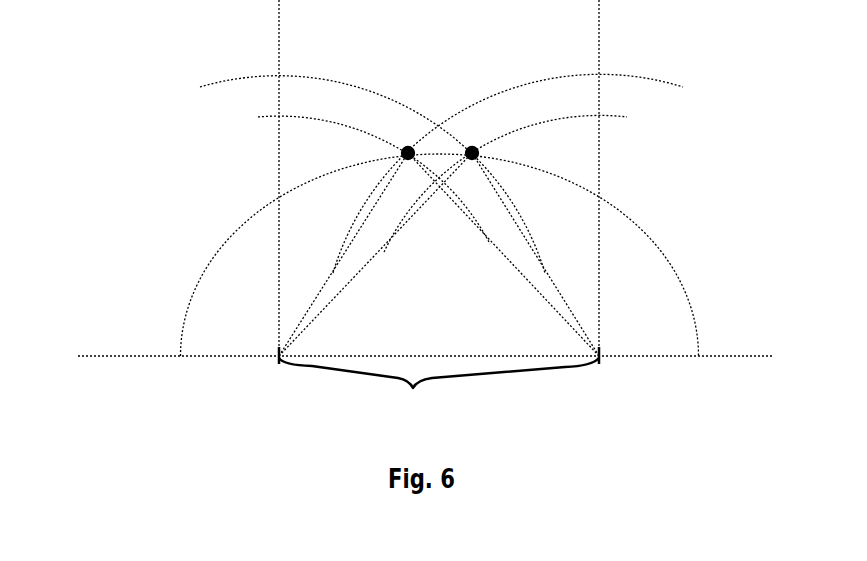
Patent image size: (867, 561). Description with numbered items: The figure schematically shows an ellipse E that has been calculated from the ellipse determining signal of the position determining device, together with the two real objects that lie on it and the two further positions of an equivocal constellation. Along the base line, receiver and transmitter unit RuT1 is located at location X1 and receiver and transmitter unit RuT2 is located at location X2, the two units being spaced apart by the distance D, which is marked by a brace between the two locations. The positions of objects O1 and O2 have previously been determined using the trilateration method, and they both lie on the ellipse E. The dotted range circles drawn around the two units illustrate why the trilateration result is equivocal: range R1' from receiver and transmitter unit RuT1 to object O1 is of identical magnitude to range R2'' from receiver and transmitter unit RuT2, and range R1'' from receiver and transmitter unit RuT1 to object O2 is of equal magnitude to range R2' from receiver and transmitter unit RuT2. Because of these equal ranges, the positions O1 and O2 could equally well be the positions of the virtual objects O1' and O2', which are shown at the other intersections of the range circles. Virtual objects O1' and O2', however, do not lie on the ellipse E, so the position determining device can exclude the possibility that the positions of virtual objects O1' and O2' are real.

The ellipse E is at (440, 255).
The range R1'' is at (372, 165).
The range R1' is at (374, 180).
The range R2'' is at (508, 165).
The range R2' is at (505, 183).
The object O1 is at (415, 206).
The object O2 is at (466, 206).
The virtual object O1' is at (450, 85).
The virtual object O2' is at (437, 233).
The receiver and transmitter unit RuT1 is at (281, 371).
The receiver and transmitter unit RuT2 is at (601, 371).
The location X1 is at (284, 411).
The location X2 is at (606, 411).
The distance D is at (439, 390).